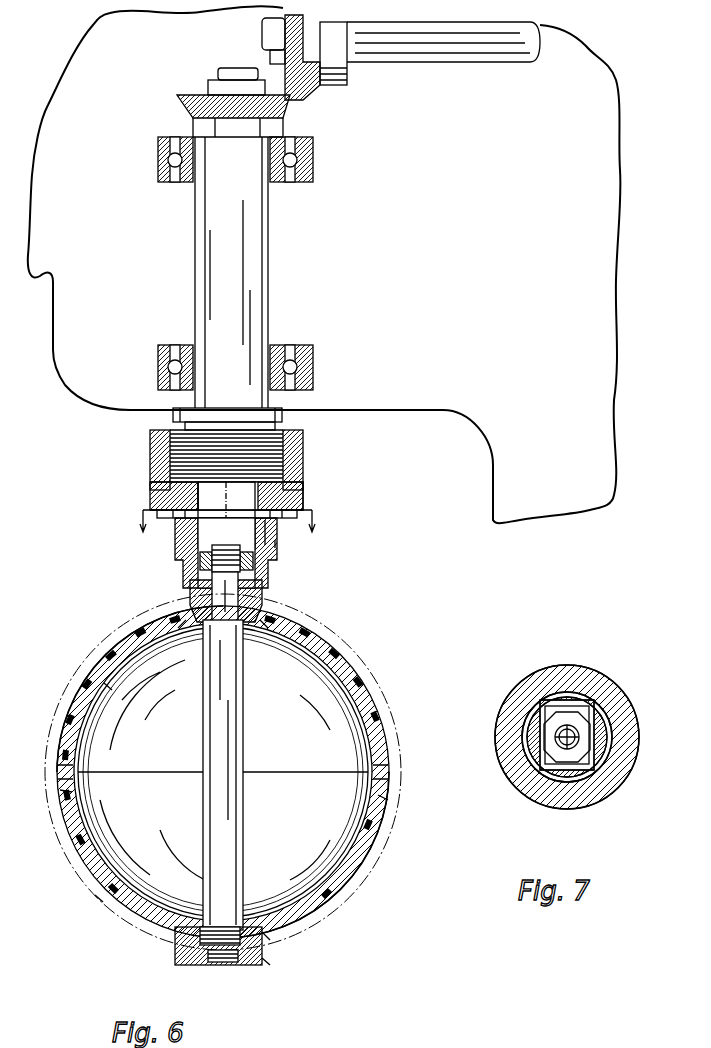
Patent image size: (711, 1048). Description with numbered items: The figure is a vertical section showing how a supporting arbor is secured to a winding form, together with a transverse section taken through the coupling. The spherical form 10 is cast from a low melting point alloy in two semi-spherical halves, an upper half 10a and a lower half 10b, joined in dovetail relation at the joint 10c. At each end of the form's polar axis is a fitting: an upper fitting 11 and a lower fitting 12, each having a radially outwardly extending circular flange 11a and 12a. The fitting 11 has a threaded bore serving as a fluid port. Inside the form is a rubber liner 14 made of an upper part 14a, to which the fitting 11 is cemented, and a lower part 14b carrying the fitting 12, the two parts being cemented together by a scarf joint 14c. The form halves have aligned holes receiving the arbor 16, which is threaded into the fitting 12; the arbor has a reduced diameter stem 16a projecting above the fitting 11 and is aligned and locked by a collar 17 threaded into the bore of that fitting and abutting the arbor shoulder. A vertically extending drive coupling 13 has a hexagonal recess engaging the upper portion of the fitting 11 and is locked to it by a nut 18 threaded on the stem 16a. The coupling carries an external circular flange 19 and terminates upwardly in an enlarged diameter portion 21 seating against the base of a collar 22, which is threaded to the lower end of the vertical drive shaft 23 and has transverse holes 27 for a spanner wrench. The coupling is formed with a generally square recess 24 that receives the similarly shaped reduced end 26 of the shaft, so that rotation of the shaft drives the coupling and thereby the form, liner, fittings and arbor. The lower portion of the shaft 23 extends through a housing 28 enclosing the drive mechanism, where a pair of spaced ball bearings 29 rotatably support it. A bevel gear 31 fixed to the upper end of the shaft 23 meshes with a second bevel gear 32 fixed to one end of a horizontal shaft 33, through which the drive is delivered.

In FIG. 6, the spherical form 10 is at (60, 805).
In FIG. 6, the upper form half 10a is at (102, 683).
In FIG. 6, the lower form half 10b is at (360, 860).
In FIG. 6, the dovetail joint 10c is at (72, 770).
In FIG. 6, the upper fitting 11 is at (268, 602).
In FIG. 6, the flange of upper fitting 11a is at (280, 616).
In FIG. 6, the lower fitting 12 is at (175, 948).
In FIG. 6, the flange of lower fitting 12a is at (262, 950).
In FIG. 6, the drive coupling 13 is at (268, 570).
In FIG. 7, the drive coupling 13 is at (522, 739).
In FIG. 6, the inner rubber liner 14 is at (375, 700).
In FIG. 6, the upper liner part 14a is at (90, 722).
In FIG. 6, the lower liner part 14b is at (95, 895).
In FIG. 6, the scarf joint 14c is at (72, 792).
In FIG. 6, the arbor 16 is at (243, 864).
In FIG. 6, the arbor stem 16a is at (240, 618).
In FIG. 7, the arbor stem 16a is at (578, 741).
In FIG. 6, the collar 17 is at (188, 600).
In FIG. 6, the nut 18 is at (200, 570).
In FIG. 7, the nut 18 is at (582, 716).
In FIG. 6, the circular flange 19 is at (278, 550).
In FIG. 6, the enlarged diameter portion 21 is at (300, 505).
In FIG. 6, the collar 22 is at (303, 492).
In FIG. 7, the collar 22 is at (635, 724).
In FIG. 6, the vertical drive shaft 23 is at (210, 268).
In FIG. 6, the square recess 24 is at (215, 530).
In FIG. 7, the square recess 24 is at (528, 692).
In FIG. 6, the reduced end of shaft 26 is at (150, 495).
In FIG. 6, the transverse holes 27 is at (158, 450).
In FIG. 6, the housing 28 is at (68, 385).
In FIG. 6, the ball bearings 29 is at (313, 162).
In FIG. 6, the bevel gear 31 is at (177, 100).
In FIG. 6, the second bevel gear 32 is at (282, 62).
In FIG. 6, the horizontal shaft 33 is at (487, 52).